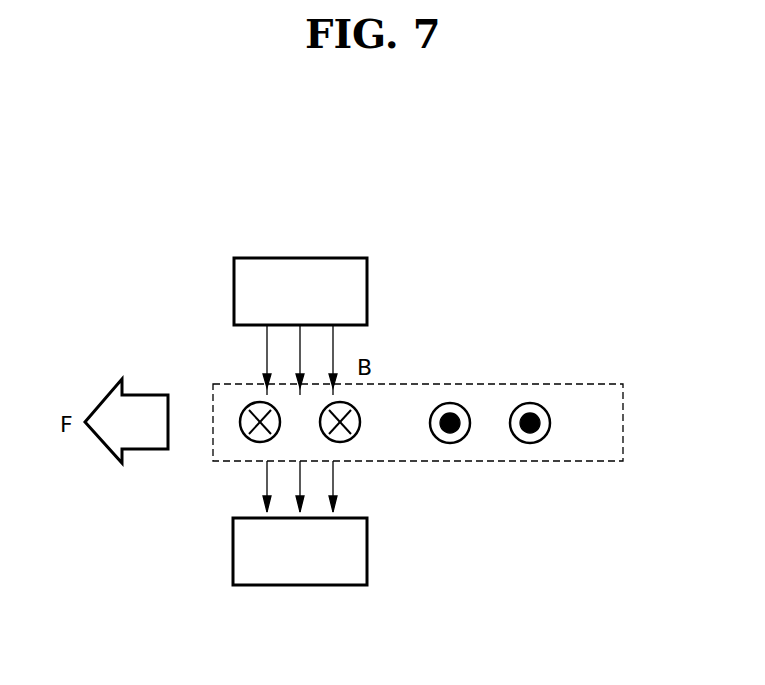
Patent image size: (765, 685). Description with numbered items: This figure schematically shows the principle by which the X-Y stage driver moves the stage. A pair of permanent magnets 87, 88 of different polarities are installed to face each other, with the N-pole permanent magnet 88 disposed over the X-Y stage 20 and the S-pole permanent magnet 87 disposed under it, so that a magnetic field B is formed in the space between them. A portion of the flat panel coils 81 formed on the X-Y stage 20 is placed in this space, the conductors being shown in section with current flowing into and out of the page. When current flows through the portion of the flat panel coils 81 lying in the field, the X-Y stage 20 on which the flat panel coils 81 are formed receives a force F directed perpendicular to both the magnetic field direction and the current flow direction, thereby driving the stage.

The permanent magnet 88 is at (367, 292).
The permanent magnet 87 is at (367, 552).
The flat panel coils 81 is at (355, 408).
The X-Y stage 20 is at (597, 384).